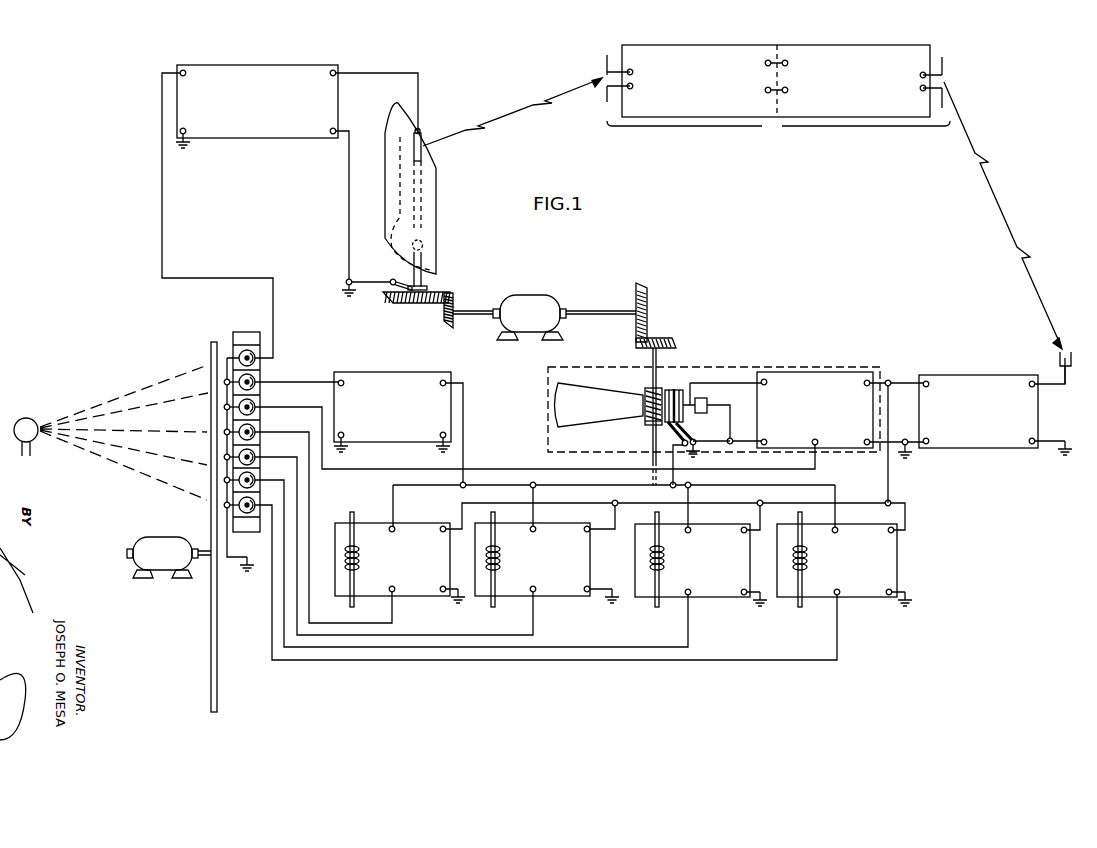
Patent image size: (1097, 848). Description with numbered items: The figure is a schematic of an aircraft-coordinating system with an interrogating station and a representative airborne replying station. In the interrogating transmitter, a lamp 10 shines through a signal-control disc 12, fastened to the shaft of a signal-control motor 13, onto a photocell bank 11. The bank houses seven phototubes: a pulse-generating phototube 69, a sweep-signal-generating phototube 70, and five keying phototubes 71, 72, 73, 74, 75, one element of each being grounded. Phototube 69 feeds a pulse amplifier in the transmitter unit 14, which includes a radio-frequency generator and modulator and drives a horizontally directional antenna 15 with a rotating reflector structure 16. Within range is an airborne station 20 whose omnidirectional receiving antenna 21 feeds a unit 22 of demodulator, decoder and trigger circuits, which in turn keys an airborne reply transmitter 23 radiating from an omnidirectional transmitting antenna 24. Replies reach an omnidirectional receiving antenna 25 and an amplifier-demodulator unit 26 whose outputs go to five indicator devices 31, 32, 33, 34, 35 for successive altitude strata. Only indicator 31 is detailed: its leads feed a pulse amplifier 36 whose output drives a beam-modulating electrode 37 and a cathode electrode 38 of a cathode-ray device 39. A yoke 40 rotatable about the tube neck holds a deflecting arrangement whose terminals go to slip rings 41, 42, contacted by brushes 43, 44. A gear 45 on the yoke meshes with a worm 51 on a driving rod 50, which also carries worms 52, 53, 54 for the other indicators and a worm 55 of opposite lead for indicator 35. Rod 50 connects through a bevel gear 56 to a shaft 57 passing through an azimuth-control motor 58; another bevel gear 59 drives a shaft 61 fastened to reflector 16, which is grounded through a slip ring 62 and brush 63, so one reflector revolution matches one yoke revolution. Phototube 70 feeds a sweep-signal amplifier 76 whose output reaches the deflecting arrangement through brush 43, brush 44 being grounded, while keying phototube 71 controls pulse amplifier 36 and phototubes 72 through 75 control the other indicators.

The lamp 10 is at (30, 419).
The photocell bank 11 is at (248, 332).
The signal-control disc 12 is at (208, 342).
The signal-control motor 13 is at (163, 537).
The transmitter unit 14 is at (340, 88).
The horizontally directional antenna 15 is at (422, 134).
The rotating reflector structure 16 is at (438, 193).
The airborne station 20 is at (763, 141).
The omnidirectional receiving antenna 21 is at (604, 72).
The demodulator, decoder, and trigger circuits unit 22 is at (696, 46).
The airborne reply transmitter 23 is at (855, 46).
The omnidirectional transmitting antenna 24 is at (944, 81).
The omnidirectional receiving antenna 25 is at (1058, 360).
The amplifier-demodulator unit 26 is at (973, 375).
The indicator device 31 is at (803, 366).
The indicator device 32 is at (406, 608).
The indicator device 33 is at (549, 608).
The indicator device 34 is at (699, 618).
The indicator device 35 is at (848, 618).
The pulse amplifier 36 is at (786, 372).
The beam-modulating electrode 37 is at (693, 400).
The cathode electrode 38 is at (708, 405).
The cathode-ray device 39 is at (586, 389).
The yoke 40 is at (645, 395).
The slip ring 41 is at (673, 390).
The slip ring 42 is at (676, 389).
The brush 43 is at (668, 437).
The brush 44 is at (688, 432).
The gear 45 is at (645, 424).
The driving rod 50 is at (651, 357).
The worm 51 is at (646, 406).
The worm 52 is at (345, 553).
The worm 53 is at (486, 555).
The worm 54 is at (650, 555).
The worm 55 is at (793, 555).
The bevel gear 56 is at (650, 338).
The shaft 57 is at (468, 311).
The azimuth-control motor 58 is at (540, 295).
The bevel gear 59 is at (443, 316).
The shaft 61 is at (424, 266).
The slip ring 62 is at (429, 288).
The brush 63 is at (397, 278).
The pulse-generating phototube 69 is at (256, 362).
The sweep-signal-generating phototube 70 is at (256, 386).
The keying phototube 71 is at (256, 411).
The keying phototube 72 is at (256, 436).
The keying phototube 73 is at (256, 461).
The keying phototube 74 is at (255, 485).
The keying phototube 75 is at (248, 518).
The sweep-signal amplifier 76 is at (400, 372).